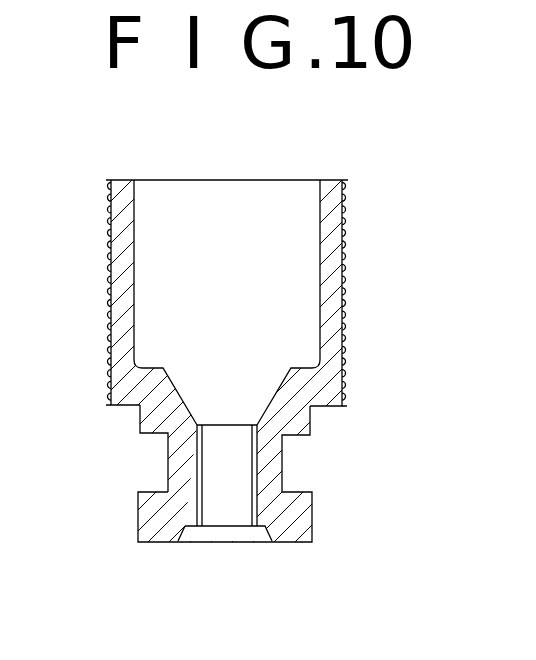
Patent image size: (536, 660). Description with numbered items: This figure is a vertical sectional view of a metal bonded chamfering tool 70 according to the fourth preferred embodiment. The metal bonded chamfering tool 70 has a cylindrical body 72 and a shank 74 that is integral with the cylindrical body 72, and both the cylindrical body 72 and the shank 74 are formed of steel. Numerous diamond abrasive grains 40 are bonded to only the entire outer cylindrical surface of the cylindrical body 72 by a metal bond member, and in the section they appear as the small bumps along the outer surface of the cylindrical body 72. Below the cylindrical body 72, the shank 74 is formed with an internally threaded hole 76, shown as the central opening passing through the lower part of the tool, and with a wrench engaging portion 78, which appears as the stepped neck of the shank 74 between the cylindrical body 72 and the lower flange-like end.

The diamond abrasive grains 40 is at (105, 213).
The metal bonded chamfering tool 70 is at (358, 222).
The cylindrical body 72 is at (348, 272).
The shank 74 is at (312, 513).
The internally threaded hole 76 is at (202, 497).
The wrench engaging portion 78 is at (168, 466).